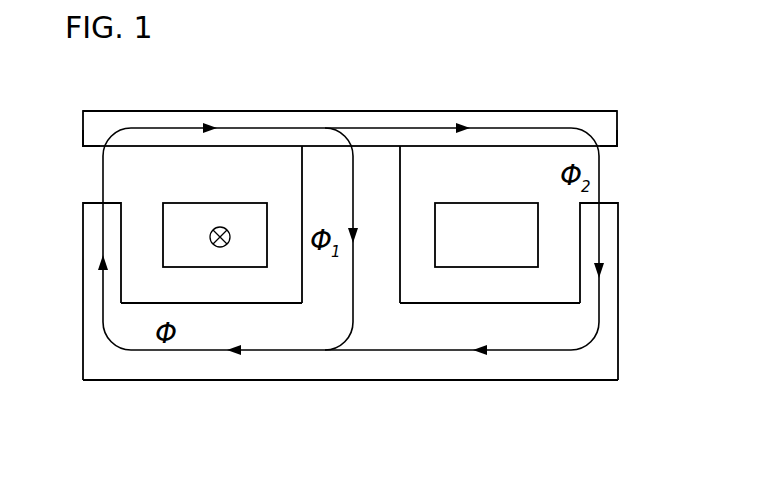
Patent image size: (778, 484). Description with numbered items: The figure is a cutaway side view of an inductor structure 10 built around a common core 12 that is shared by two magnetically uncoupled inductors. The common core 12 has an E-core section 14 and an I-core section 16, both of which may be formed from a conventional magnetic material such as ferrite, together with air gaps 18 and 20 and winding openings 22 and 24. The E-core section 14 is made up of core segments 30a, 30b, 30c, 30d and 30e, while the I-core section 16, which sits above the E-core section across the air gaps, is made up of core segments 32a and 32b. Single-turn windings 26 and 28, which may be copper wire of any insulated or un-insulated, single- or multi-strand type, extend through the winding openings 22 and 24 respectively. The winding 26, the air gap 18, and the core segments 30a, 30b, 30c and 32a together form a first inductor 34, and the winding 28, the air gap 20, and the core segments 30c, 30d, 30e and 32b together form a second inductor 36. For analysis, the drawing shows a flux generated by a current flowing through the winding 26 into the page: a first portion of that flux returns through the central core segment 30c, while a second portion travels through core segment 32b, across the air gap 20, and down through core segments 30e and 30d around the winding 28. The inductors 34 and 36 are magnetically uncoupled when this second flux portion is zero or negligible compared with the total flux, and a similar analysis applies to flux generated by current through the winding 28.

The inductor structure 10 is at (393, 80).
The common core 12 is at (83, 350).
The E-core section 14 is at (618, 350).
The I-core section 16 is at (83, 110).
The air gap 18 is at (80, 178).
The air gap 20 is at (620, 178).
The winding opening 22 is at (226, 292).
The winding opening 24 is at (500, 292).
The single-turn winding 26 is at (183, 203).
The single-turn winding 28 is at (520, 203).
The core segment 30a is at (83, 245).
The core segment 30b is at (222, 380).
The core segment 30c is at (400, 215).
The core segment 30d is at (490, 380).
The core segment 30e is at (618, 245).
The core segment 32a is at (203, 111).
The core segment 32b is at (500, 111).
The first inductor 34 is at (75, 142).
The second inductor 36 is at (625, 143).